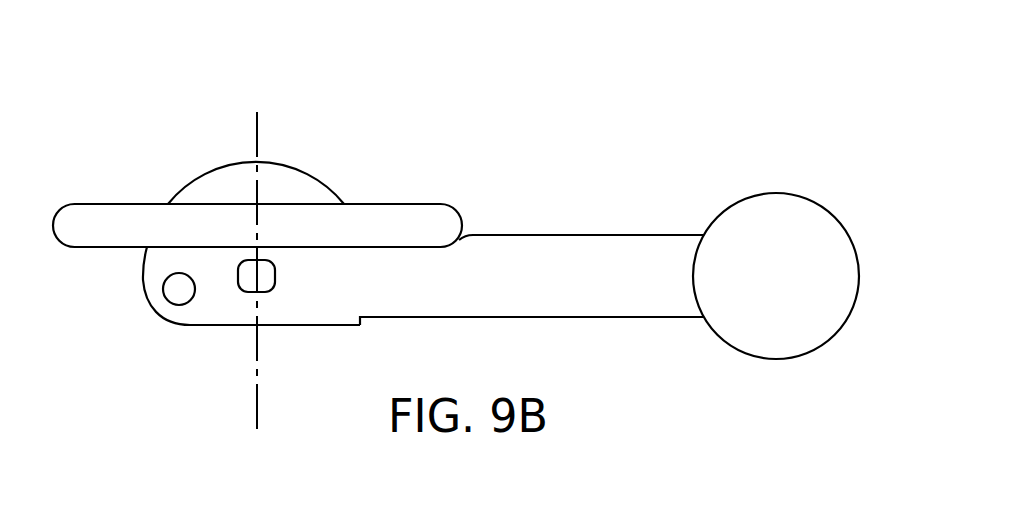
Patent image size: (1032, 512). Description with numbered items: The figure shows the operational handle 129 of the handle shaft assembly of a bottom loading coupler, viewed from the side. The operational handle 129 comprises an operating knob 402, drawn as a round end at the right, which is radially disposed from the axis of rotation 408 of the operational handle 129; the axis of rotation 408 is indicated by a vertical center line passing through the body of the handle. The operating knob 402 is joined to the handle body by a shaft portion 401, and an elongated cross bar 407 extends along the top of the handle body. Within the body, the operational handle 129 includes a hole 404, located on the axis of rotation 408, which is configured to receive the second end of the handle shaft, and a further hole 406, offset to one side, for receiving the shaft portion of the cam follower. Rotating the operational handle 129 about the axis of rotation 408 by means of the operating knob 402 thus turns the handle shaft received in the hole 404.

The operational handle 129 is at (147, 112).
The shaft 401 is at (577, 235).
The operating knob 402 is at (848, 228).
The hole 404 is at (245, 292).
The hole 406 is at (163, 290).
The cross bar 407 is at (396, 204).
The axis of rotation 408 is at (257, 127).